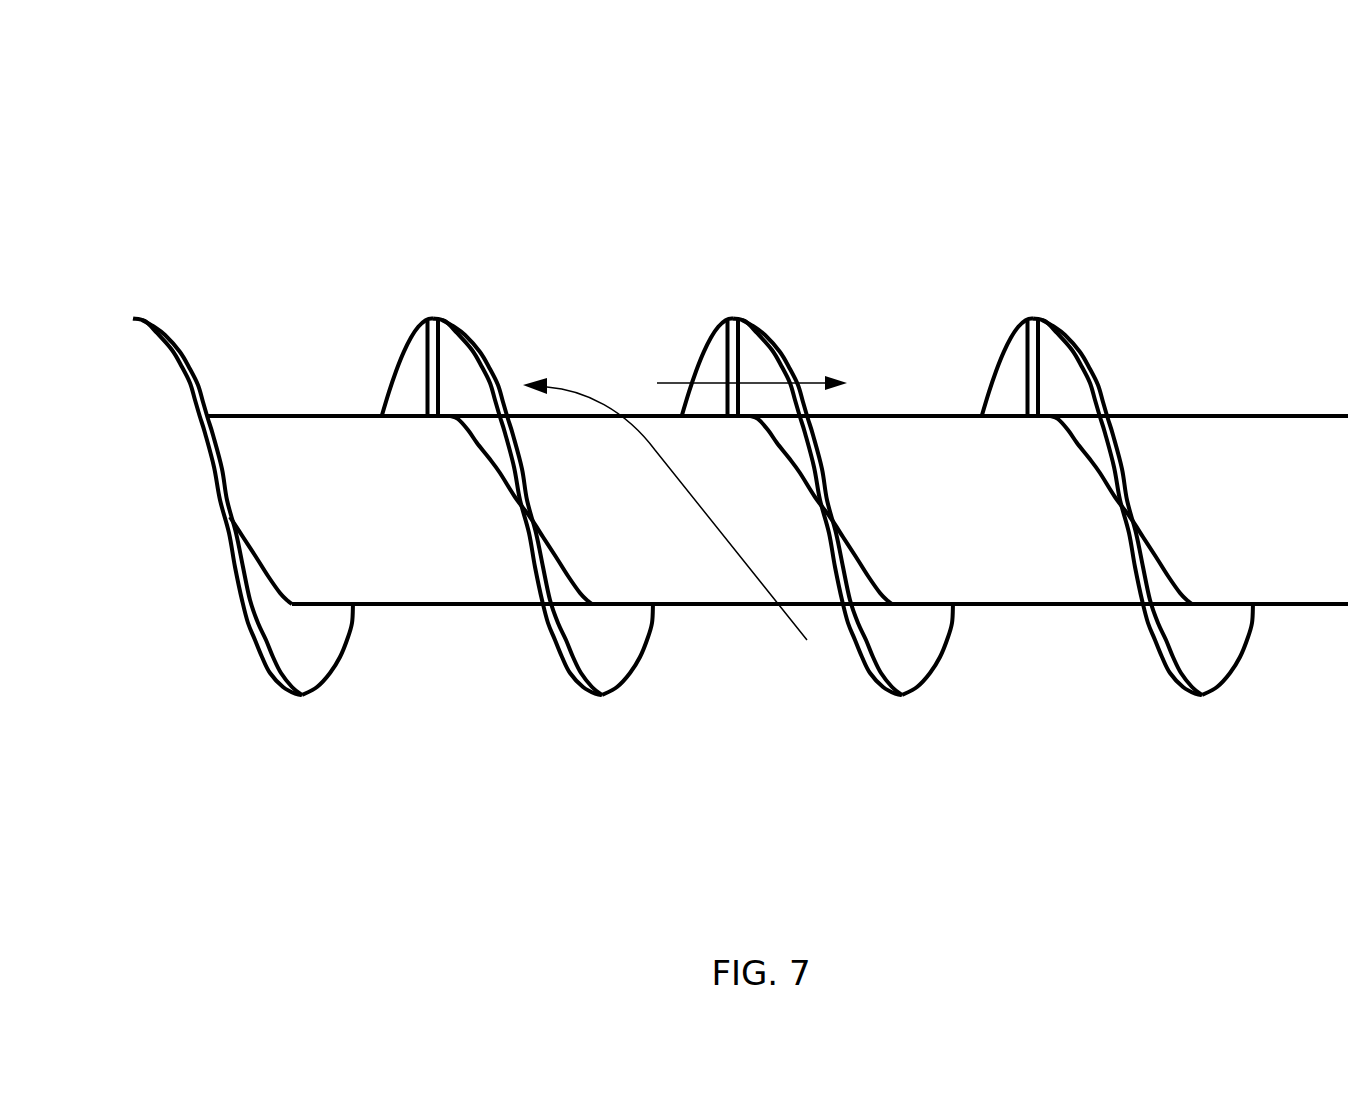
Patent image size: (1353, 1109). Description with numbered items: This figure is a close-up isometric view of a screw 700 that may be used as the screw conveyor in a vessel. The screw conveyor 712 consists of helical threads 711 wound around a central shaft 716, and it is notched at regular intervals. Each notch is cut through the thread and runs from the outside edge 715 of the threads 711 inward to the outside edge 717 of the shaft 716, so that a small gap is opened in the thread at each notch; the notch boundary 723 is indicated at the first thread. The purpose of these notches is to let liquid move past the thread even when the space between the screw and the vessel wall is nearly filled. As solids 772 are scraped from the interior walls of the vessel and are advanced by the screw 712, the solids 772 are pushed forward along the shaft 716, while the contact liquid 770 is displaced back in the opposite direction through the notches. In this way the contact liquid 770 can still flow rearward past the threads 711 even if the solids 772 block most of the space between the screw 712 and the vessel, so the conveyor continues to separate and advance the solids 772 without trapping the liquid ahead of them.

The auger screw 700 is at (230, 117).
The threads 711 is at (600, 667).
The screw conveyor 712 is at (268, 433).
The outside edge of threads 715 is at (428, 320).
The shaft 716 is at (1230, 453).
The outside edge of shaft 717 is at (428, 420).
The slot edge 723 is at (420, 333).
The contact liquid 770 is at (780, 387).
The solids 772 is at (680, 526).